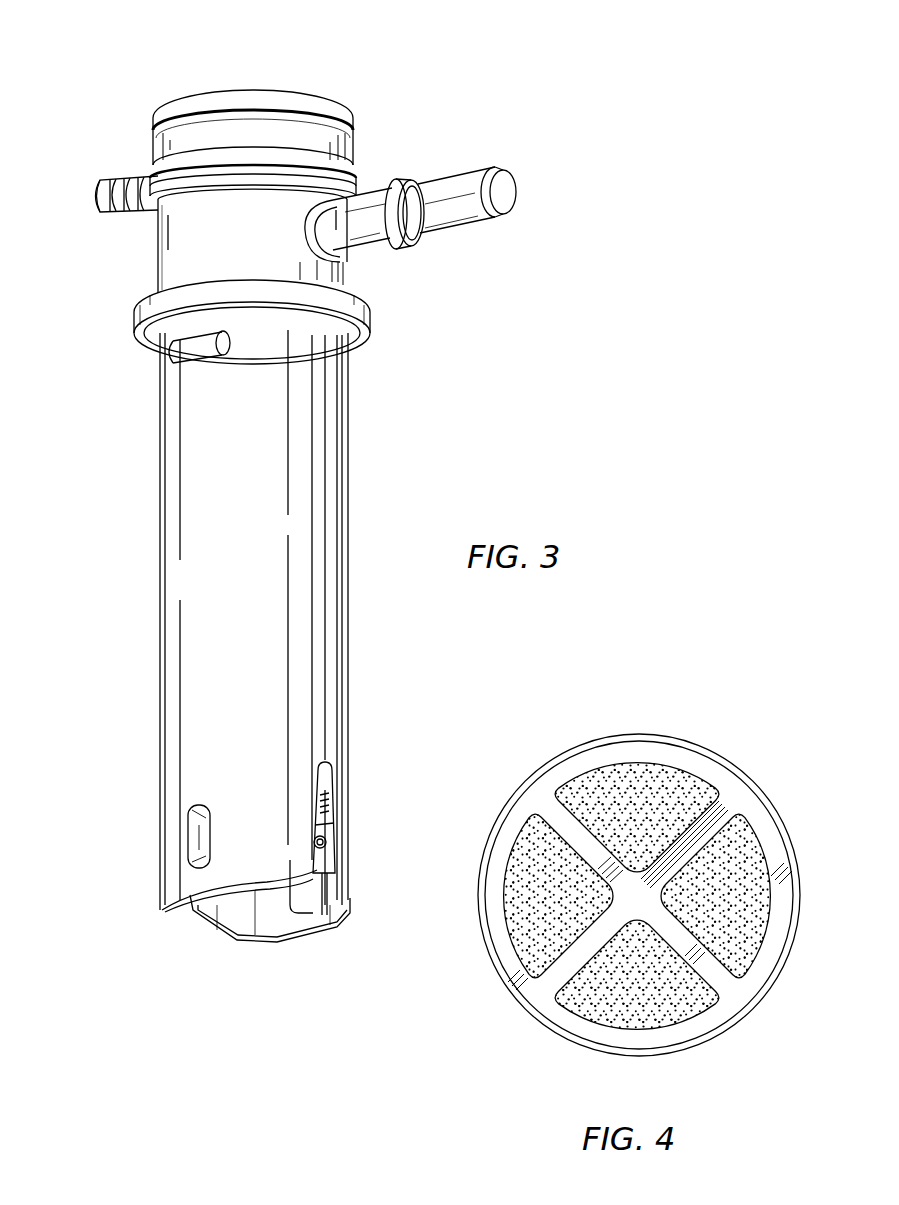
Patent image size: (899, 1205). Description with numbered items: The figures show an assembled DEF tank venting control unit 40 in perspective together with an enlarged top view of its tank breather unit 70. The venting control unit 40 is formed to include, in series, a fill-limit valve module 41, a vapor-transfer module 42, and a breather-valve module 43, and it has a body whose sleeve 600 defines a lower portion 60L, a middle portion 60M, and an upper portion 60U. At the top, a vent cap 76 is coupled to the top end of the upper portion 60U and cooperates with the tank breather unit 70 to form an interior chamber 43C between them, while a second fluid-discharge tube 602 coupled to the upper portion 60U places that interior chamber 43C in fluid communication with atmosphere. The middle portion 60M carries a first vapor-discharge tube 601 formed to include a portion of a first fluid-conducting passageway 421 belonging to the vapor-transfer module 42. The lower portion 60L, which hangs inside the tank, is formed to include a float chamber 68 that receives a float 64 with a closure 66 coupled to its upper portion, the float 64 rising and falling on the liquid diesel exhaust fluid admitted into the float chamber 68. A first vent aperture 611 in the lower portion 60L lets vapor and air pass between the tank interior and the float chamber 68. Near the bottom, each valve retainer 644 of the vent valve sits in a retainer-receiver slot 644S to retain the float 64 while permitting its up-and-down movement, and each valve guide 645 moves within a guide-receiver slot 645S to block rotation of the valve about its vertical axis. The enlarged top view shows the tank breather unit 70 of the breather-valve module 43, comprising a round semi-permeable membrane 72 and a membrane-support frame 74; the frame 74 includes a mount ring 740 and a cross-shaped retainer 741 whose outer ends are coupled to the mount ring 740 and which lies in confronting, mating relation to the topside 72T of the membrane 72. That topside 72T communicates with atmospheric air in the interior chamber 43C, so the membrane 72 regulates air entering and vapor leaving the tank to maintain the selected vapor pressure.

In FIG. 3, the DEF tank venting control unit 40 is at (408, 105).
In FIG. 3, the fill-limit valve module 41 is at (153, 657).
In FIG. 3, the vapor-transfer module 42 is at (150, 258).
In FIG. 3, the breather-valve module 43 is at (150, 130).
In FIG. 3, the interior chamber 43C is at (303, 132).
In FIG. 3, the upper portion of body 60U is at (265, 120).
In FIG. 3, the middle portion of body 60M is at (158, 233).
In FIG. 3, the lower portion of body 60L is at (165, 795).
In FIG. 3, the float 64 is at (318, 608).
In FIG. 3, the closure 66 is at (298, 352).
In FIG. 3, the float chamber 68 is at (318, 478).
In FIG. 3, the tank breather unit 70 is at (373, 318).
In FIG. 4, the tank breather unit 70 is at (742, 730).
In FIG. 4, the semi-permeable membrane 72 is at (540, 925).
In FIG. 4, the topside of semi-permeable membrane 72T is at (650, 780).
In FIG. 4, the membrane-support frame 74 is at (805, 885).
In FIG. 3, the vent cap 76 is at (208, 86).
In FIG. 3, the first fluid-conducting passageway 421 is at (370, 215).
In FIG. 3, the sleeve 600 is at (160, 382).
In FIG. 3, the first vapor-discharge tube 601 is at (497, 175).
In FIG. 3, the second fluid-discharge tube 602 is at (105, 177).
In FIG. 3, the first vent aperture 611 is at (200, 358).
In FIG. 3, the valve retainer 644 is at (190, 830).
In FIG. 3, the retainer-receiver slot 644S is at (193, 870).
In FIG. 3, the valve guide 645 is at (330, 790).
In FIG. 3, the guide-receiver slot 645S is at (336, 866).
In FIG. 4, the mount ring 740 is at (706, 1032).
In FIG. 4, the cross-shaped retainer 741 is at (715, 945).